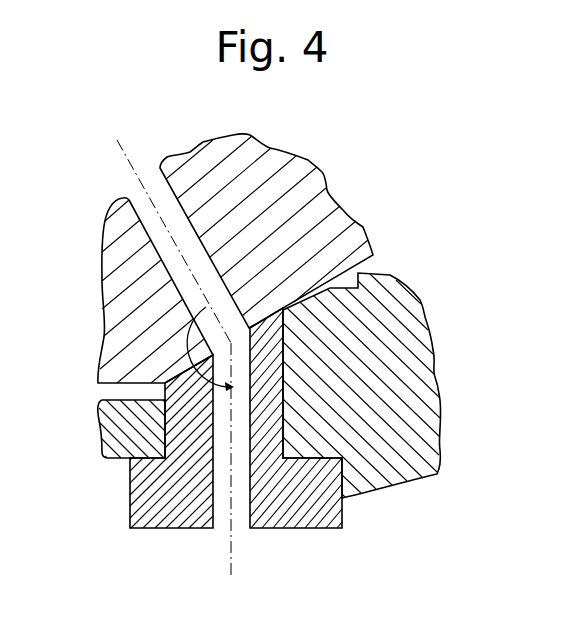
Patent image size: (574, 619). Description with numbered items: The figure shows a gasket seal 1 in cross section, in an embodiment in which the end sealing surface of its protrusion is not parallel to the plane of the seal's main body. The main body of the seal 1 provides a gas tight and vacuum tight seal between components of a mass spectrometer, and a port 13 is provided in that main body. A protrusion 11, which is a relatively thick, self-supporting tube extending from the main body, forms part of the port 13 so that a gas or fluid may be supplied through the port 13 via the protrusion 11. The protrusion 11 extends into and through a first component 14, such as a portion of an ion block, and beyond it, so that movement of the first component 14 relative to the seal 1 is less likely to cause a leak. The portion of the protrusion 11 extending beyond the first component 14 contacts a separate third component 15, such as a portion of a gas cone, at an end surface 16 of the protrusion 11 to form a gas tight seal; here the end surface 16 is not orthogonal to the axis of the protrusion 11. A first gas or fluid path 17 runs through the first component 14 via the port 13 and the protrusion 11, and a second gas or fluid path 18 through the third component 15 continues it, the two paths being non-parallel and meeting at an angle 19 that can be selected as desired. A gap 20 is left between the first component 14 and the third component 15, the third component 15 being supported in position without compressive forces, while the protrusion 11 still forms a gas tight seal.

The seal 1 is at (316, 513).
The protrusion 11 is at (195, 417).
The port 13 is at (221, 510).
The first component 14 is at (385, 300).
The third component 15 is at (135, 288).
The end surface 16 is at (185, 373).
The first gas or fluid path 17 is at (232, 403).
The second gas or fluid path 18 is at (144, 186).
The angle 19 is at (187, 341).
The gap 20 is at (115, 393).